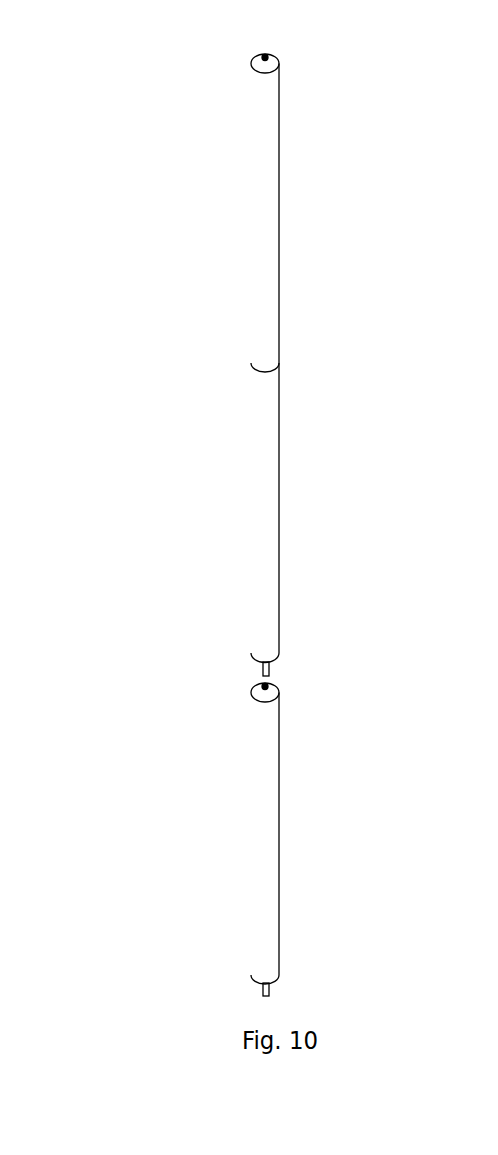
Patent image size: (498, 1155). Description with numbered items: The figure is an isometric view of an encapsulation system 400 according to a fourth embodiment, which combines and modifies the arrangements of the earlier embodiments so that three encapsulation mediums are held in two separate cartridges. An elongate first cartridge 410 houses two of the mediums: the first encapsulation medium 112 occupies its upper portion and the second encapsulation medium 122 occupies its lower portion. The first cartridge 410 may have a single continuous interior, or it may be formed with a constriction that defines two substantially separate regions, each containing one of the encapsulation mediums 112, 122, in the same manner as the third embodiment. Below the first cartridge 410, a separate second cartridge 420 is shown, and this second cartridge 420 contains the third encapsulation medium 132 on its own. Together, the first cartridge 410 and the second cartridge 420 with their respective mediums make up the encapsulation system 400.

The encapsulation system 400 is at (178, 105).
The first cartridge 410 is at (180, 463).
The second cartridge 420 is at (180, 775).
The first encapsulation medium 112 is at (267, 227).
The second encapsulation medium 122 is at (265, 455).
The third encapsulation medium 132 is at (268, 833).